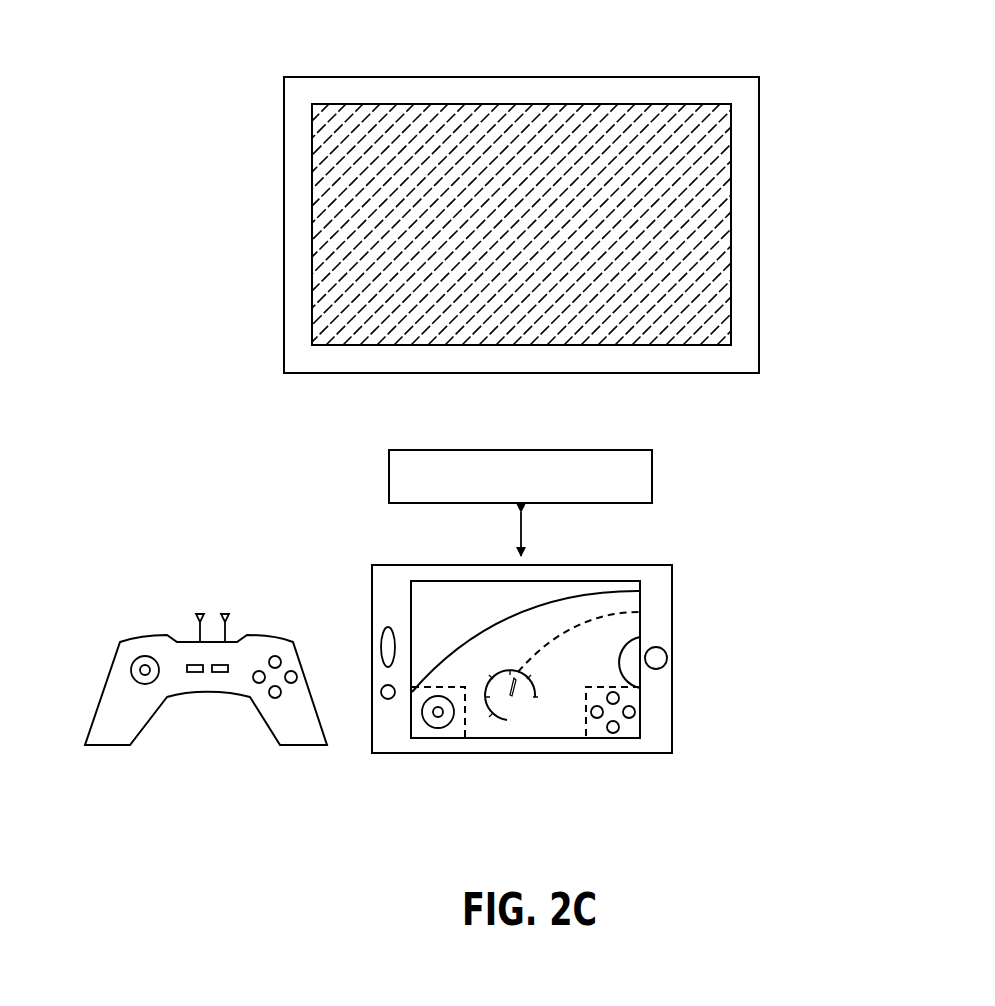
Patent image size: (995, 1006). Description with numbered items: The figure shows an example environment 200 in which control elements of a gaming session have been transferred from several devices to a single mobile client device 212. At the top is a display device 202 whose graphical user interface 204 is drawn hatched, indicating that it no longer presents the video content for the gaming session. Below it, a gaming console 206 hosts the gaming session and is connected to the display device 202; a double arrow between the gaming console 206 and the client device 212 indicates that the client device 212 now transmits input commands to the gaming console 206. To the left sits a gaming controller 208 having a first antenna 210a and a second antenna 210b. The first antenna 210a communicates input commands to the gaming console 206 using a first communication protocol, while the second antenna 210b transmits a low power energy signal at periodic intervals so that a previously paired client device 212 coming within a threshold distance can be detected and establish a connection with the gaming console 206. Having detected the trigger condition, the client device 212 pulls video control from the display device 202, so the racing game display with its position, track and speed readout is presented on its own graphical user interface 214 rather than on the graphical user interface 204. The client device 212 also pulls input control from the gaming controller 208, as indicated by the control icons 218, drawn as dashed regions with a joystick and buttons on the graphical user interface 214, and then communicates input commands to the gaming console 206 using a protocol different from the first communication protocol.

The environment 200 is at (205, 385).
The display device 202 is at (346, 77).
The graphical user interface 204 is at (630, 118).
The gaming console 206 is at (520, 503).
The gaming controller 208 is at (108, 672).
The first antenna 210a is at (196, 617).
The second antenna 210b is at (226, 612).
The client device 212 is at (673, 617).
The graphical user interface 214 is at (618, 588).
The control icons 218 is at (610, 738).